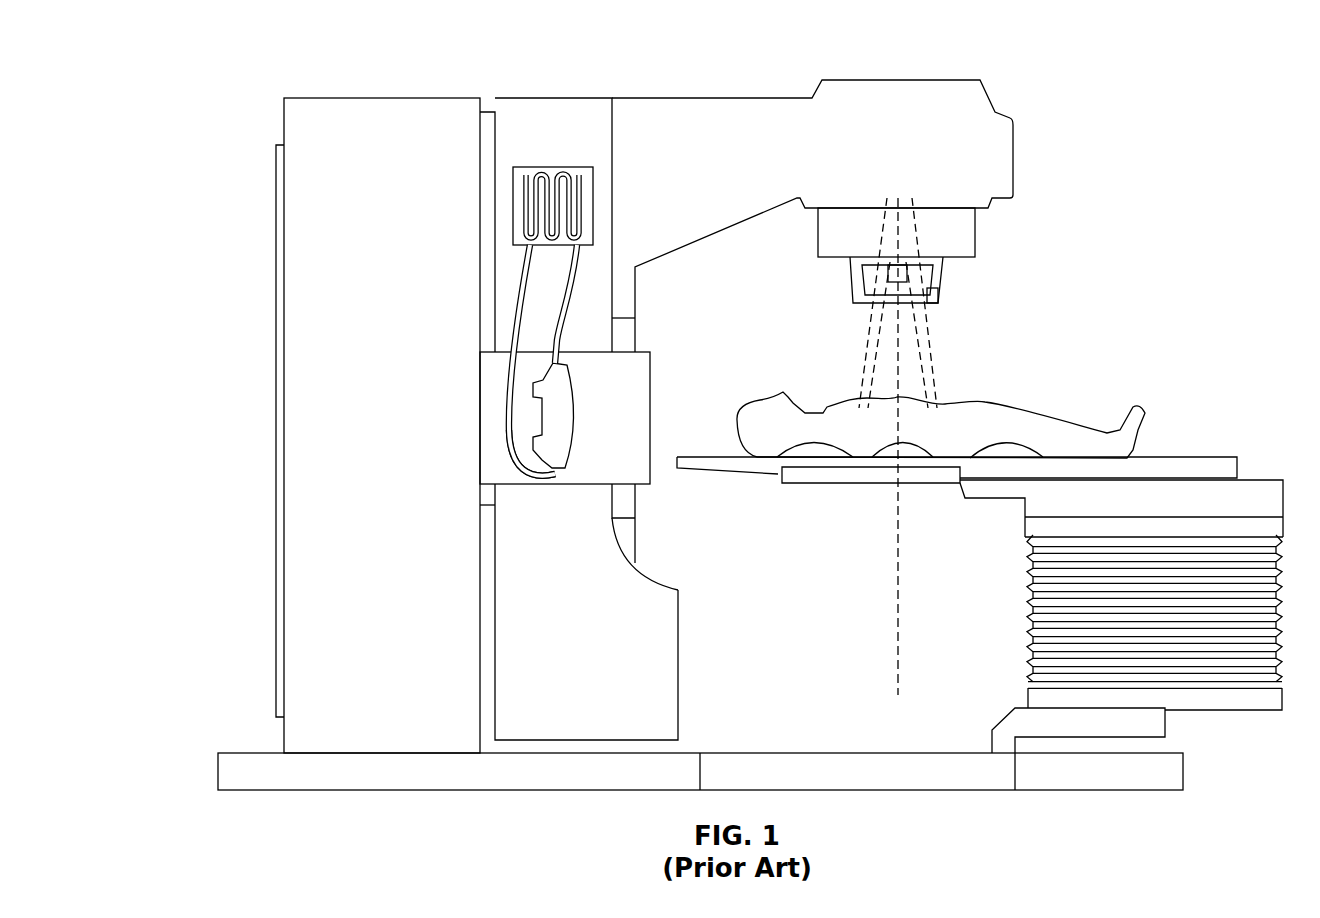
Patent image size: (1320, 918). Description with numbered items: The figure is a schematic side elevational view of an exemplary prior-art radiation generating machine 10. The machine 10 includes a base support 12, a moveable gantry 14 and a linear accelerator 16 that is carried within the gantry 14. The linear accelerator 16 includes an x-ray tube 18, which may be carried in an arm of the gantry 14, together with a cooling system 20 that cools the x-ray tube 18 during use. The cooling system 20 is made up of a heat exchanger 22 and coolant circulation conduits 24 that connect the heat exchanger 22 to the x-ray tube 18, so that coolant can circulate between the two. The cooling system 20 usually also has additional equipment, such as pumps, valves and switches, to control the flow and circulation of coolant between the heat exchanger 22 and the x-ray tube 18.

The radiation generating machine 10 is at (245, 57).
The base support 12 is at (293, 382).
The moveable gantry 14 is at (693, 233).
The linear accelerator 16 is at (566, 484).
The x-ray tube 18 is at (575, 418).
The cooling system 20 is at (504, 207).
The heat exchanger 22 is at (563, 248).
The coolant circulation conduits 24 is at (562, 360).